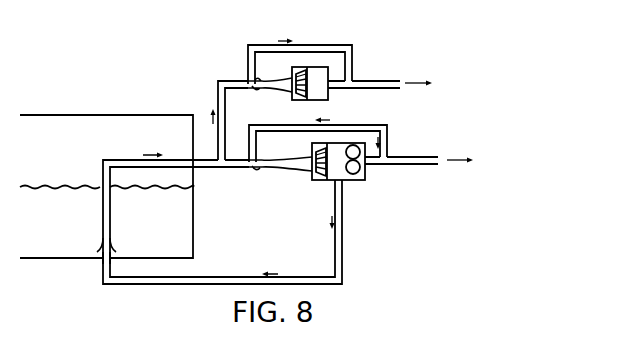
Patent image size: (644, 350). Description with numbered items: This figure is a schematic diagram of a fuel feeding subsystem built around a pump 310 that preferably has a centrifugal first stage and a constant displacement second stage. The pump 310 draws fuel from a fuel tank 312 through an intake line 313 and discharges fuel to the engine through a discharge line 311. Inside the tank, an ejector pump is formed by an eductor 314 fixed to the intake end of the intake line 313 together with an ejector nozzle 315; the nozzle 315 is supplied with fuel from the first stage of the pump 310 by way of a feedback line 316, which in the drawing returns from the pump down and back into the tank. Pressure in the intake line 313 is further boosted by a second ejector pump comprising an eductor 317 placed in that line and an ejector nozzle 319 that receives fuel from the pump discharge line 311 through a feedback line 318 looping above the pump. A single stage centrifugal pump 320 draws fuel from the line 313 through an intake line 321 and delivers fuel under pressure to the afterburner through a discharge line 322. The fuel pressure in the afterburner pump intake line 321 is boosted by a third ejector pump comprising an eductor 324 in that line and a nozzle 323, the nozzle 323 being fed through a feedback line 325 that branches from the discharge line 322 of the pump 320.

The pump 310 is at (362, 185).
The discharge line 311 is at (403, 157).
The fuel tank 312 is at (183, 222).
The intake line 313 is at (295, 169).
The eductor 314 is at (113, 247).
The ejector nozzle 315 is at (100, 252).
The feedback line 316 is at (343, 247).
The eductor 317 is at (265, 159).
The feedback line 318 is at (343, 126).
The ejector nozzle 319 is at (258, 171).
The single stage centrifugal pump 320 is at (312, 58).
The intake line 321 is at (217, 91).
The discharge line 322 is at (381, 80).
The nozzle 323 is at (258, 91).
The eductor 324 is at (274, 90).
The feedback line 325 is at (337, 45).